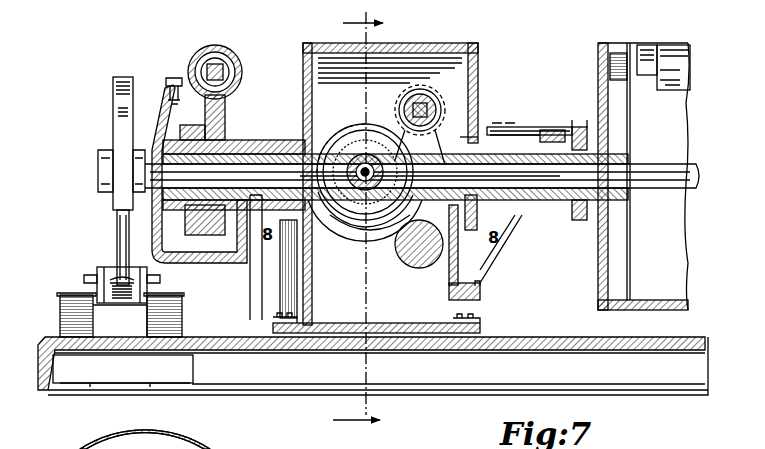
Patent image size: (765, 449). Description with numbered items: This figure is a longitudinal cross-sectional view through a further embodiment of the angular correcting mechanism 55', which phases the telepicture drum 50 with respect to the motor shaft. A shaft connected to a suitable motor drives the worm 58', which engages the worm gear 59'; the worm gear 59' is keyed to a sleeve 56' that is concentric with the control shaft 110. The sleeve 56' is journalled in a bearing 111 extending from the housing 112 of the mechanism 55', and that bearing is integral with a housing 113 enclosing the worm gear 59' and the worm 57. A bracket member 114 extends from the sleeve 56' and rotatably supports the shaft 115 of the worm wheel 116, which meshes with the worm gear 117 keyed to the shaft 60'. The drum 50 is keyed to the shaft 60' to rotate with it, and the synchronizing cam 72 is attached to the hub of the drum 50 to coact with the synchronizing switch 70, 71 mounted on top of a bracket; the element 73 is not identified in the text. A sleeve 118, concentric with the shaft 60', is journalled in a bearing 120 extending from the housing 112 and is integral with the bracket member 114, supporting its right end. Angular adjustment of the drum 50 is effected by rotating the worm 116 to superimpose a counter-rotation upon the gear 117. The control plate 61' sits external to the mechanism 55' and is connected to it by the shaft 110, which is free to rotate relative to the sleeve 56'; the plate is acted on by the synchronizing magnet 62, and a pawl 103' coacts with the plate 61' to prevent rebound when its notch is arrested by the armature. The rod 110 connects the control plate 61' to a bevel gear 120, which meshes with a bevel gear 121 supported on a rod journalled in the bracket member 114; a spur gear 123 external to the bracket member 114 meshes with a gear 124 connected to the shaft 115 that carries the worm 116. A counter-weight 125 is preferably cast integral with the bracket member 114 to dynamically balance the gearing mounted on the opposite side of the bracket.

The telepicture drum 50 is at (600, 282).
The angular correcting mechanism 55' is at (383, 79).
The sleeve 56' is at (395, 163).
The worm 57 is at (185, 72).
The worm 58' is at (226, 67).
The worm gear 59' is at (228, 160).
The shaft 60' is at (562, 187).
The control plate 61' is at (106, 143).
The synchronizing magnet 62 is at (184, 317).
The synchronizing switch 70 is at (556, 128).
The synchronizing switch 71 is at (545, 130).
The synchronizing cam 72 is at (578, 222).
The pin 73 is at (585, 125).
The pawl 103' is at (114, 256).
The control shaft 110 is at (272, 269).
The bearing 111 is at (272, 257).
The housing 112 is at (311, 283).
The housing 113 is at (235, 264).
The bracket member 114 is at (346, 232).
The shaft 115 is at (420, 90).
The worm wheel 116 is at (440, 95).
The worm gear 117 is at (384, 232).
The sleeve 118 is at (507, 249).
The bearing 120 is at (340, 128).
The bevel gear 121 is at (368, 184).
The spur gear 123 is at (360, 104).
The gear 124 is at (479, 80).
The counter-weight 125 is at (418, 262).